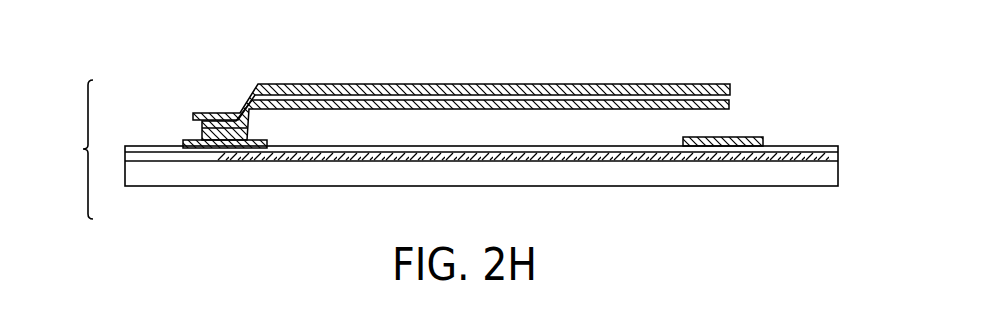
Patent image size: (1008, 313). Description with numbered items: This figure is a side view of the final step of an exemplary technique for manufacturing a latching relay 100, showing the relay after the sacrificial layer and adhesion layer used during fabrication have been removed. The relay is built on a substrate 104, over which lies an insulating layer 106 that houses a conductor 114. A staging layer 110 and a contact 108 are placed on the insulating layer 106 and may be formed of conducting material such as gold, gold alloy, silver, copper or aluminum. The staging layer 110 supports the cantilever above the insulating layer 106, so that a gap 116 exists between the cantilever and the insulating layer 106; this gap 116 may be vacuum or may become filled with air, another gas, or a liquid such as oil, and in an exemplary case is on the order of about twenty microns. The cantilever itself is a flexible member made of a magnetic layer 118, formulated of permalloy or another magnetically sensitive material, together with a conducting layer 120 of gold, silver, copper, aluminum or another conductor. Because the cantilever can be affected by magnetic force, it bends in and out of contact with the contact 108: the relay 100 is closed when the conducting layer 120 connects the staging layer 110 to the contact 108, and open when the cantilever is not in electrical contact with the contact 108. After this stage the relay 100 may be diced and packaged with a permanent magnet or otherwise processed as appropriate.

The latching relay 100 is at (65, 149).
The substrate 104 is at (158, 178).
The insulating layer 106 is at (800, 152).
The contact 108 is at (752, 136).
The staging layer 110 is at (183, 142).
The conductor 114 is at (572, 162).
The gap 116 is at (725, 128).
The magnetic layer 118 is at (497, 85).
The conducting layer 120 is at (387, 112).